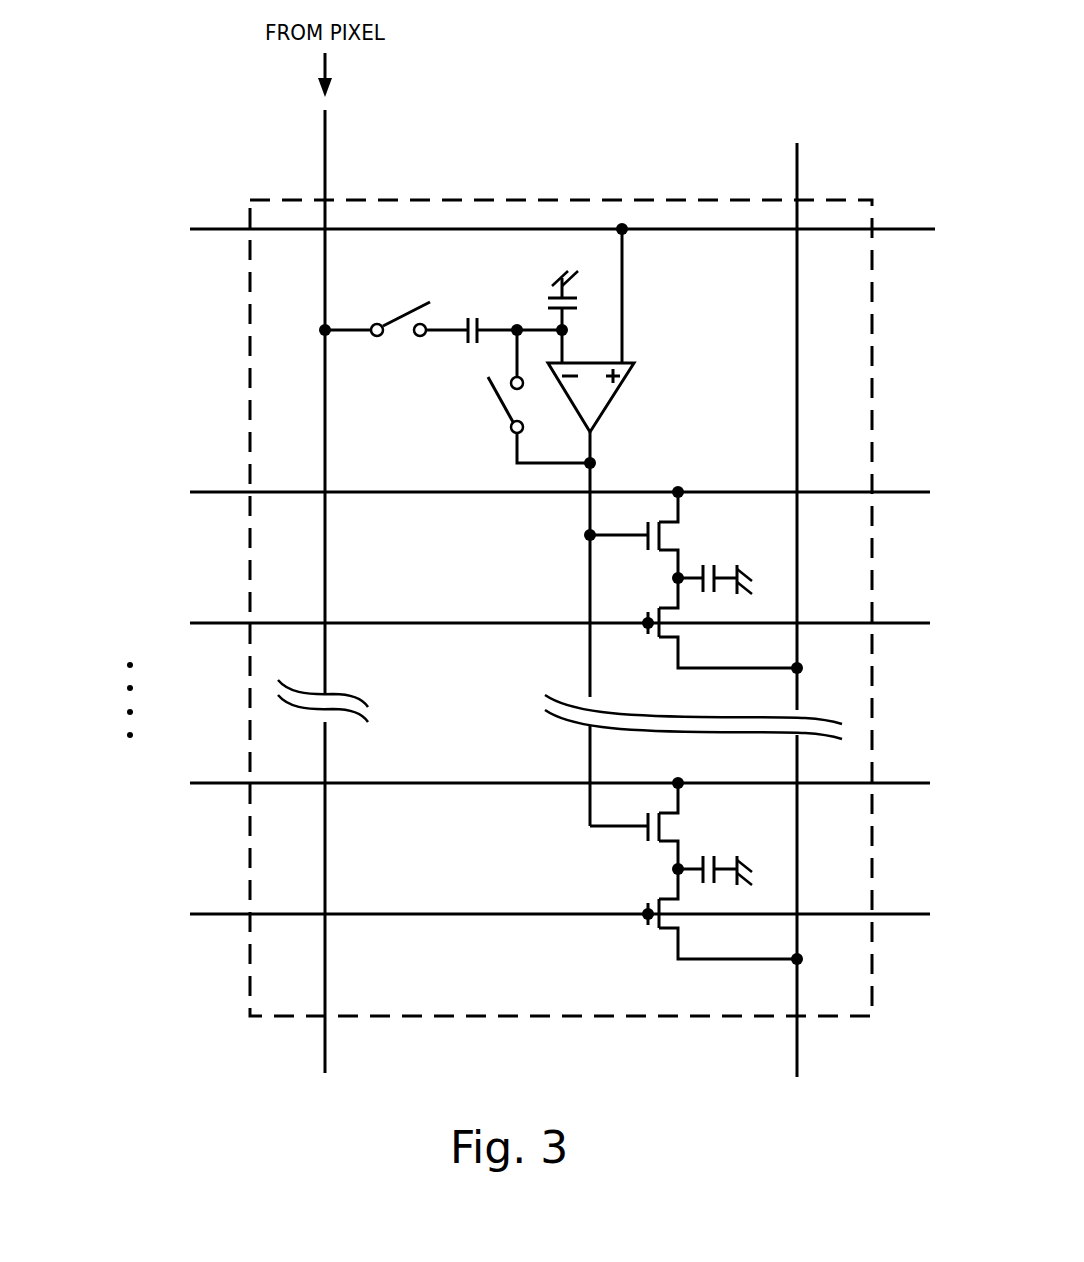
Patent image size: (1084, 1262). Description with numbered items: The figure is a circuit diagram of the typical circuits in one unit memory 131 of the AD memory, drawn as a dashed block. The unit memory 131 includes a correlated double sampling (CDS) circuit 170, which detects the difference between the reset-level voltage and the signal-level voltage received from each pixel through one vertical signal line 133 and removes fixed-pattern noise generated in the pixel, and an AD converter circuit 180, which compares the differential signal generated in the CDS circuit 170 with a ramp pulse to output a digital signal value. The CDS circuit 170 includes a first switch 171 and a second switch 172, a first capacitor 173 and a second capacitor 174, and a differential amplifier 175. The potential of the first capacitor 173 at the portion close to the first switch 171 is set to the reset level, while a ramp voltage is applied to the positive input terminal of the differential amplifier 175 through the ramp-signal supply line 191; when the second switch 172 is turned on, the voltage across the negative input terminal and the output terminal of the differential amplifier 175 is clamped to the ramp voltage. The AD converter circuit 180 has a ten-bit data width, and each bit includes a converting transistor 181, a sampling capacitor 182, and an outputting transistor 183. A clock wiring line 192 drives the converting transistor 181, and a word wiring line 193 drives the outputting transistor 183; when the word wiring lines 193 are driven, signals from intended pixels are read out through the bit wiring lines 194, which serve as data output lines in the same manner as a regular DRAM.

The unit memory 131 is at (824, 200).
The vertical signal line 133 is at (325, 155).
The correlated double sampling (CDS) circuit 170 is at (637, 352).
The switch SW1 171 is at (375, 323).
The switch SW2 172 is at (487, 377).
The capacitor C1 173 is at (466, 322).
The capacitor C2 174 is at (549, 300).
The differential amplifier 175 is at (604, 397).
The AD converter circuit 180 is at (565, 557).
The converting transistor 181 is at (646, 548).
The sampling capacitor 182 is at (718, 575).
The outputting transistor 183 is at (666, 641).
The ramp-signal supply line 191 is at (214, 230).
The clock wiring line (ck wiring line) 192 is at (212, 492).
The word wiring line 193 is at (214, 623).
The bit wiring line 194 is at (799, 348).